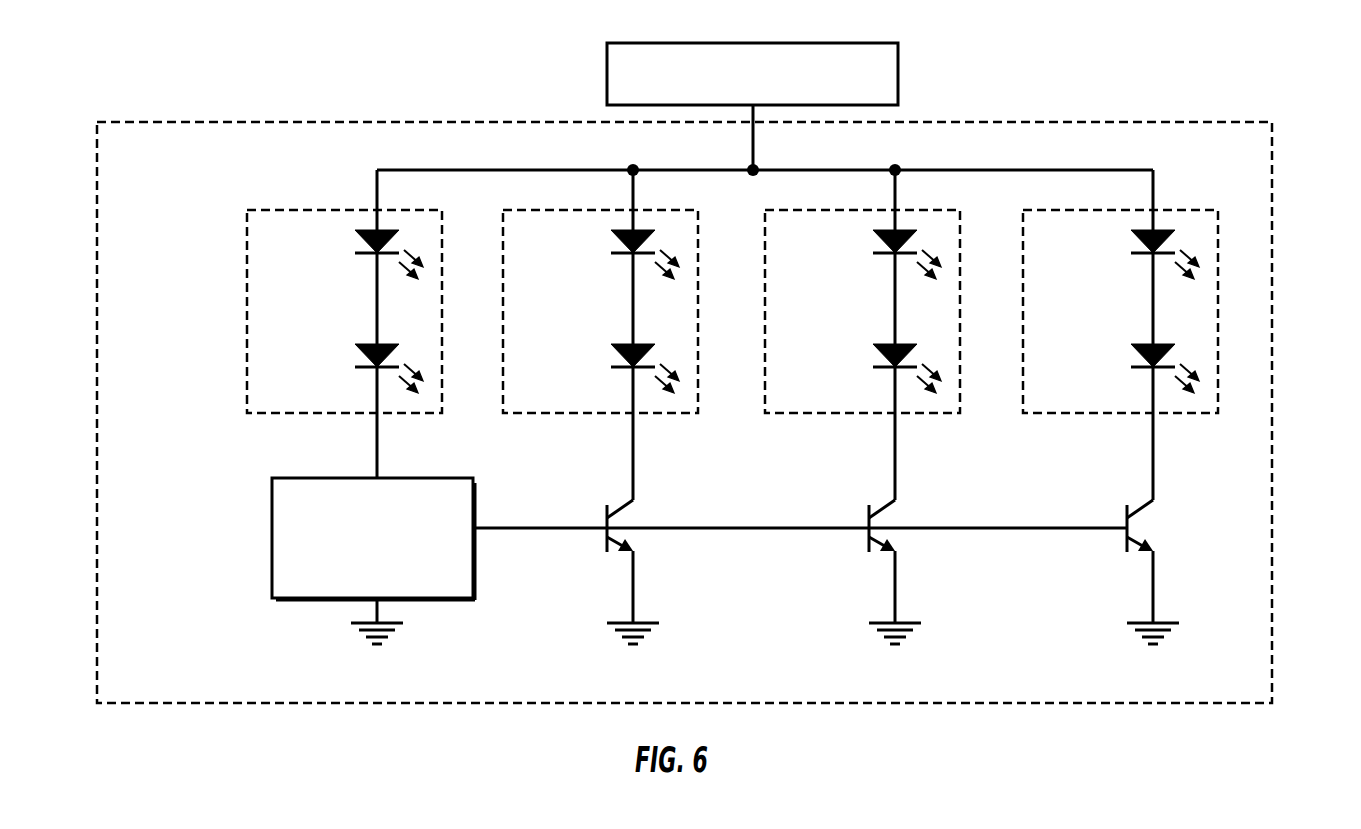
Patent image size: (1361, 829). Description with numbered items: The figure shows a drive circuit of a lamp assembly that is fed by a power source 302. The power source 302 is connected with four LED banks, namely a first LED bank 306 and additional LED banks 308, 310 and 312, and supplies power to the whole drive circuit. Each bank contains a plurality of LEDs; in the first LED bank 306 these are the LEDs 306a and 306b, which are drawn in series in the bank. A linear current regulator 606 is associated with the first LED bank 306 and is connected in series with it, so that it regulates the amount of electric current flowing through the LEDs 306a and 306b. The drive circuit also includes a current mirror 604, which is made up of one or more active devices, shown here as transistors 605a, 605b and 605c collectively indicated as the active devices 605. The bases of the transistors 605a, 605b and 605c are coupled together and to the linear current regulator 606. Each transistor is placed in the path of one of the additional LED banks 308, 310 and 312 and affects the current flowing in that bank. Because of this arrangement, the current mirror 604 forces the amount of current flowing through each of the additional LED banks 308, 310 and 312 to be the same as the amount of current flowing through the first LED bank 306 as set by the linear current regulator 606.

The power source 302 is at (898, 85).
The first LED bank 306 is at (259, 210).
The LED bank 308 is at (515, 210).
The LED bank 310 is at (777, 210).
The LED bank 312 is at (1035, 210).
The LED 306a is at (366, 345).
The LED 306b is at (366, 231).
The current mirror 604 is at (1272, 403).
The transistors 605 is at (882, 547).
The transistor 605a is at (605, 538).
The transistor 605b is at (867, 538).
The transistor 605c is at (1125, 538).
The linear current regulator 606 is at (272, 512).